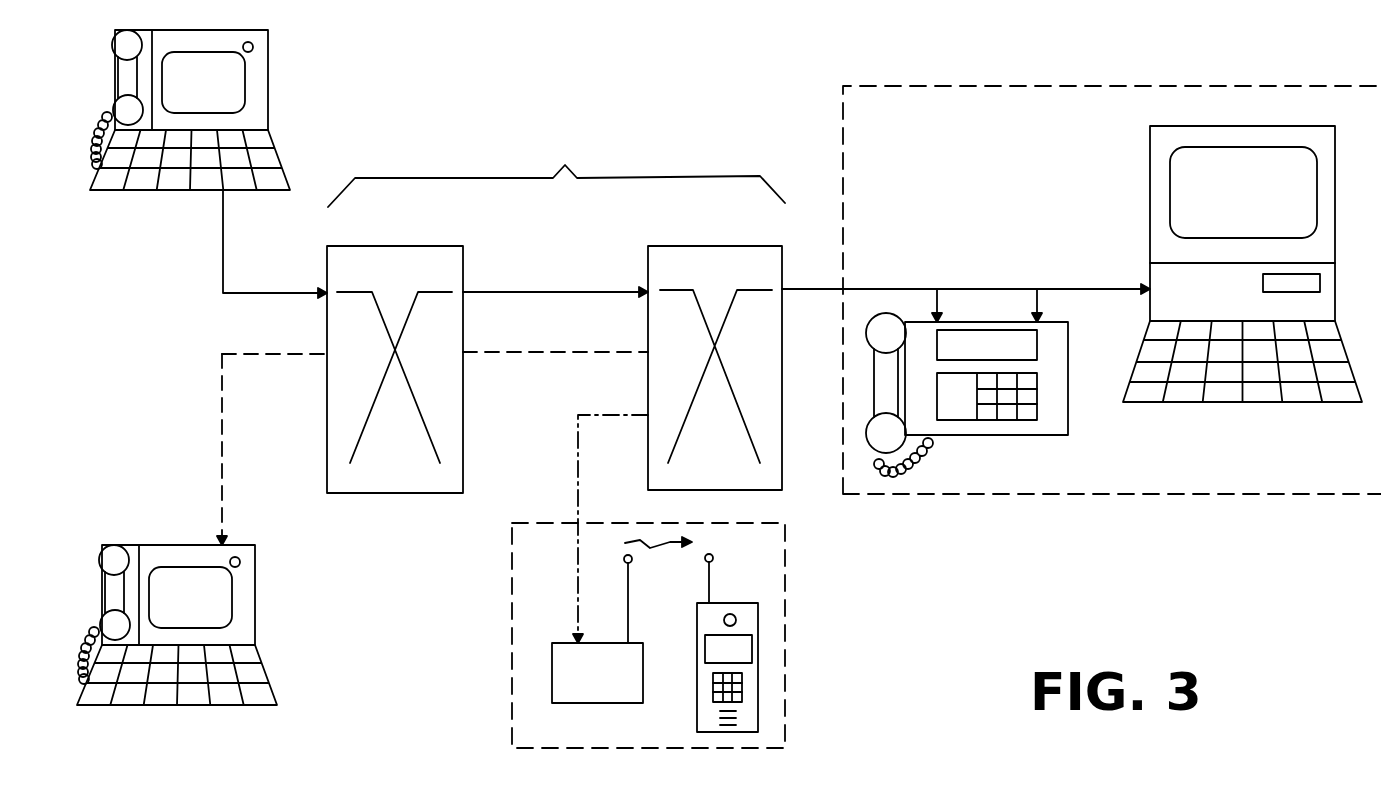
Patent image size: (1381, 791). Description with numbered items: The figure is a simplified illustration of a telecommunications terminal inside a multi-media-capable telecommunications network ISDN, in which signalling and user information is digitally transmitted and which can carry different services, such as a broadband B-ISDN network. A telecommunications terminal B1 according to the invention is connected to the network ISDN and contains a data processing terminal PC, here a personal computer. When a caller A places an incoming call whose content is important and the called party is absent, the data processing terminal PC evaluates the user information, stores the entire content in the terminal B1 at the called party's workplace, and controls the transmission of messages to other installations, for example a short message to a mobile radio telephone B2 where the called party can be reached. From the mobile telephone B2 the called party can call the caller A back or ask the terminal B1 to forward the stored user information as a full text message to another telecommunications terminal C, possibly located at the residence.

The caller A is at (115, 63).
The telecommunications terminal C is at (102, 580).
The data processing terminal PC is at (1150, 178).
The telecommunications terminal B1 is at (1122, 495).
The mobile radio telephone B2 is at (785, 618).
The telecommunications network ISDN is at (556, 169).